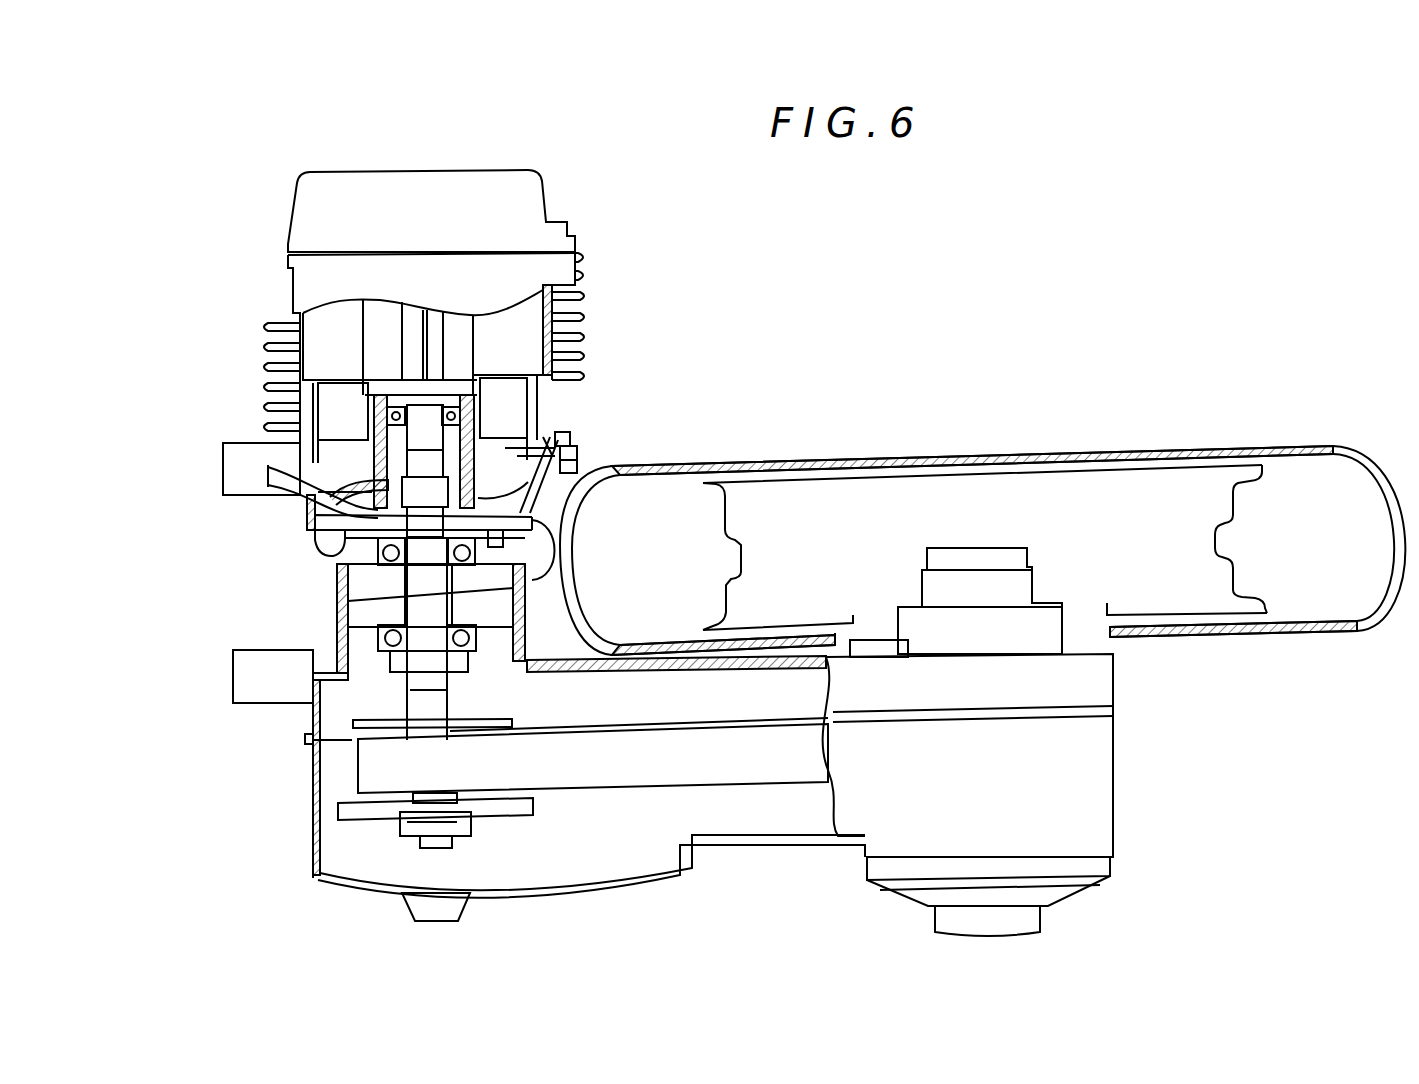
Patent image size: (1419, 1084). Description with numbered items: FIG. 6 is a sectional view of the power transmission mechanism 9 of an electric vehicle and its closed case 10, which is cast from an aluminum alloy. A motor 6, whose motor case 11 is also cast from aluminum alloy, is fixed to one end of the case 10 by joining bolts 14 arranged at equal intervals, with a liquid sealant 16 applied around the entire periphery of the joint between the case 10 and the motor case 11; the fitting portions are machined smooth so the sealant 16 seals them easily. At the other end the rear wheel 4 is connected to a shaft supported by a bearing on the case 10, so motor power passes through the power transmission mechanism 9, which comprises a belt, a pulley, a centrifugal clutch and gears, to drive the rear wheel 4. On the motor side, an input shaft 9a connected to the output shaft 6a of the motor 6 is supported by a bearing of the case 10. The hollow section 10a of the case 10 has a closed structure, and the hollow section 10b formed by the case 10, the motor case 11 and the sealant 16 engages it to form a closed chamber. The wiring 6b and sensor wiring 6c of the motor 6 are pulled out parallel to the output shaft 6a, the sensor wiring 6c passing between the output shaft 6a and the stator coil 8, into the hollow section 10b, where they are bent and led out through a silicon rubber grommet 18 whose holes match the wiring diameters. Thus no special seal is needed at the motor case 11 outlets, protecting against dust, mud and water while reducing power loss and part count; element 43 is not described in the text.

The rear wheel 4 is at (1333, 446).
The motor 6 is at (528, 168).
The output shaft 6a is at (383, 437).
The wiring 6b is at (335, 603).
The sensor wiring 6c is at (350, 553).
The coil 8 is at (502, 393).
The power transmission mechanism 9 is at (727, 765).
The input shaft 9a is at (420, 703).
The case 10 is at (1108, 832).
The hollow section 10a is at (553, 847).
The hollow section 10b is at (338, 545).
The motor case 11 is at (277, 322).
The joining bolts 14 is at (572, 435).
The sealant 16 is at (578, 457).
The grommet 18 is at (305, 463).
The gasket rail 43 is at (335, 493).